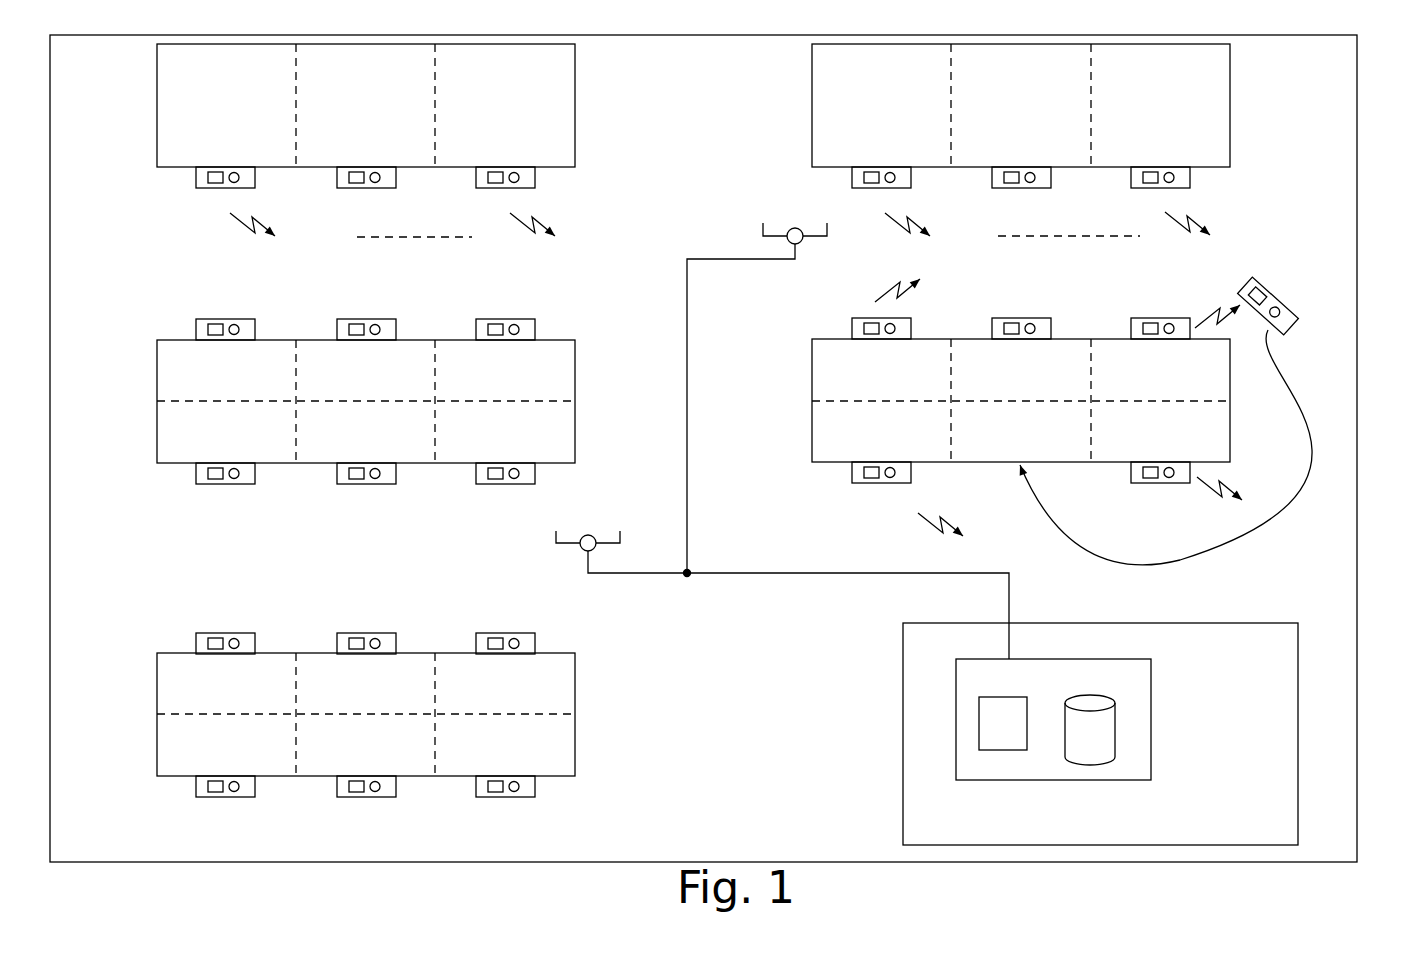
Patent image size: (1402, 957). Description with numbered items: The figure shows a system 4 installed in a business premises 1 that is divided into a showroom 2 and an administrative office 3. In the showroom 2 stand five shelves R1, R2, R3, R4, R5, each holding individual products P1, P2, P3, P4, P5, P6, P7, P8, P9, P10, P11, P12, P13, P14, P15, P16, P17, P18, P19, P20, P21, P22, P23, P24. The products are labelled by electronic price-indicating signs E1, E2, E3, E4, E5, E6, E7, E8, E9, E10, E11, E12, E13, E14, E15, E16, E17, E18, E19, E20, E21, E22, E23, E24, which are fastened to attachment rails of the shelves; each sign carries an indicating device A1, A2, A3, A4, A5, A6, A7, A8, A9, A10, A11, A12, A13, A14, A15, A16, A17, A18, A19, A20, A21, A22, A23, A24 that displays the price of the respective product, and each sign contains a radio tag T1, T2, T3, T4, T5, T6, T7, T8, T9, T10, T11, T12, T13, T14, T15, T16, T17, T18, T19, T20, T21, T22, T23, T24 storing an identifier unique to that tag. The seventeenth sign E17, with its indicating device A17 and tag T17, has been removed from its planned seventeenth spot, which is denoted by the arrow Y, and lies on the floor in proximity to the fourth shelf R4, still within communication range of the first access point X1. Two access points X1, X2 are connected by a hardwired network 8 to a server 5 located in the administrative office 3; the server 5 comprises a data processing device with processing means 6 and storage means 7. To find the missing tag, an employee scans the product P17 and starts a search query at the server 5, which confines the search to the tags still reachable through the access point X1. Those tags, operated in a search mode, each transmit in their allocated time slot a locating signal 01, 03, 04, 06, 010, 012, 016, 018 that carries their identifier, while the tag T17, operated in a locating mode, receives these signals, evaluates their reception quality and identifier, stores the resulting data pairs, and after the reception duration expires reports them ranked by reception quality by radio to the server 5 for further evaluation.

The business premises 1 is at (1364, 69).
The showroom 2 is at (639, 72).
The administrative office 3 is at (1263, 660).
The system 4 is at (1285, 234).
The server 5 is at (1162, 720).
The processing means 6 is at (1004, 738).
The storage means 7 is at (1092, 750).
The hardwired network 8 is at (687, 307).
The shelf R1 is at (157, 107).
The shelf R2 is at (812, 107).
The shelf R3 is at (157, 380).
The shelf R4 is at (812, 374).
The shelf R5 is at (157, 705).
The product P1 is at (226, 72).
The product P2 is at (365, 72).
The product P3 is at (505, 72).
The product P4 is at (881, 72).
The product P5 is at (1021, 72).
The product P6 is at (1160, 72).
The product P7 is at (226, 391).
The product P8 is at (365, 391).
The product P9 is at (505, 391).
The product P10 is at (880, 391).
The product P11 is at (1020, 391).
The product P12 is at (1159, 391).
The product P13 is at (225, 413).
The product P14 is at (364, 413).
The product P15 is at (504, 413).
The product P16 is at (880, 413).
The product P17 is at (1020, 413).
The product P18 is at (1159, 413).
The product P19 is at (225, 704).
The product P20 is at (364, 704).
The product P21 is at (504, 704).
The product P22 is at (225, 726).
The product P23 is at (364, 726).
The product P24 is at (504, 726).
The electronic price-indicating sign E1 is at (196, 183).
The electronic price-indicating sign E2 is at (337, 183).
The electronic price-indicating sign E3 is at (476, 183).
The electronic price-indicating sign E4 is at (852, 182).
The electronic price-indicating sign E5 is at (997, 189).
The electronic price-indicating sign E6 is at (1140, 189).
The electronic price-indicating sign E7 is at (196, 328).
The electronic price-indicating sign E8 is at (337, 328).
The electronic price-indicating sign E9 is at (476, 328).
The electronic price-indicating sign E10 is at (852, 328).
The electronic price-indicating sign E11 is at (992, 328).
The electronic price-indicating sign E12 is at (1131, 328).
The electronic price-indicating sign E13 is at (196, 479).
The electronic price-indicating sign E14 is at (337, 479).
The electronic price-indicating sign E15 is at (476, 479).
The electronic price-indicating sign E16 is at (852, 479).
The electronic price-indicating sign E17 is at (1246, 295).
The electronic price-indicating sign E18 is at (1131, 479).
The electronic price-indicating sign E19 is at (196, 644).
The electronic price-indicating sign E20 is at (337, 644).
The electronic price-indicating sign E21 is at (476, 644).
The electronic price-indicating sign E22 is at (196, 792).
The electronic price-indicating sign E23 is at (337, 792).
The electronic price-indicating sign E24 is at (476, 792).
The indicating device A1 is at (215, 171).
The indicating device A2 is at (356, 171).
The indicating device A3 is at (495, 171).
The indicating device A4 is at (871, 171).
The indicating device A5 is at (1011, 171).
The indicating device A6 is at (1150, 171).
The indicating device A7 is at (215, 336).
The indicating device A8 is at (356, 336).
The indicating device A9 is at (495, 336).
The indicating device A10 is at (871, 335).
The indicating device A11 is at (1011, 335).
The indicating device A12 is at (1150, 335).
The indicating device A13 is at (215, 467).
The indicating device A14 is at (356, 467).
The indicating device A15 is at (495, 467).
The indicating device A16 is at (871, 466).
The indicating device A17 is at (1260, 297).
The indicating device A18 is at (1150, 466).
The indicating device A19 is at (215, 650).
The indicating device A20 is at (356, 650).
The indicating device A21 is at (495, 650).
The indicating device A22 is at (215, 781).
The indicating device A23 is at (356, 781).
The indicating device A24 is at (495, 781).
The radio tag T1 is at (234, 172).
The radio tag T2 is at (375, 172).
The radio tag T3 is at (514, 172).
The radio tag T4 is at (890, 172).
The radio tag T5 is at (1030, 172).
The radio tag T6 is at (1169, 172).
The radio tag T7 is at (234, 336).
The radio tag T8 is at (375, 336).
The radio tag T9 is at (514, 336).
The radio tag T10 is at (890, 335).
The radio tag T11 is at (1030, 335).
The radio tag T12 is at (1169, 335).
The radio tag T13 is at (234, 467).
The radio tag T14 is at (375, 467).
The radio tag T15 is at (514, 467).
The radio tag T16 is at (890, 466).
The radio tag T17 is at (1283, 313).
The radio tag T18 is at (1169, 466).
The radio tag T19 is at (234, 650).
The radio tag T20 is at (375, 650).
The radio tag T21 is at (514, 650).
The radio tag T22 is at (234, 781).
The radio tag T23 is at (375, 781).
The radio tag T24 is at (514, 781).
The locating signal 01 is at (255, 227).
The locating signal 03 is at (550, 222).
The locating signal 04 is at (912, 219).
The locating signal 06 is at (1198, 220).
The locating signal 010 is at (892, 291).
The locating signal 012 is at (1215, 312).
The locating signal 016 is at (950, 523).
The locating signal 018 is at (1232, 484).
The access point X1 is at (790, 244).
The access point X2 is at (596, 536).
The arrow Y is at (1250, 535).